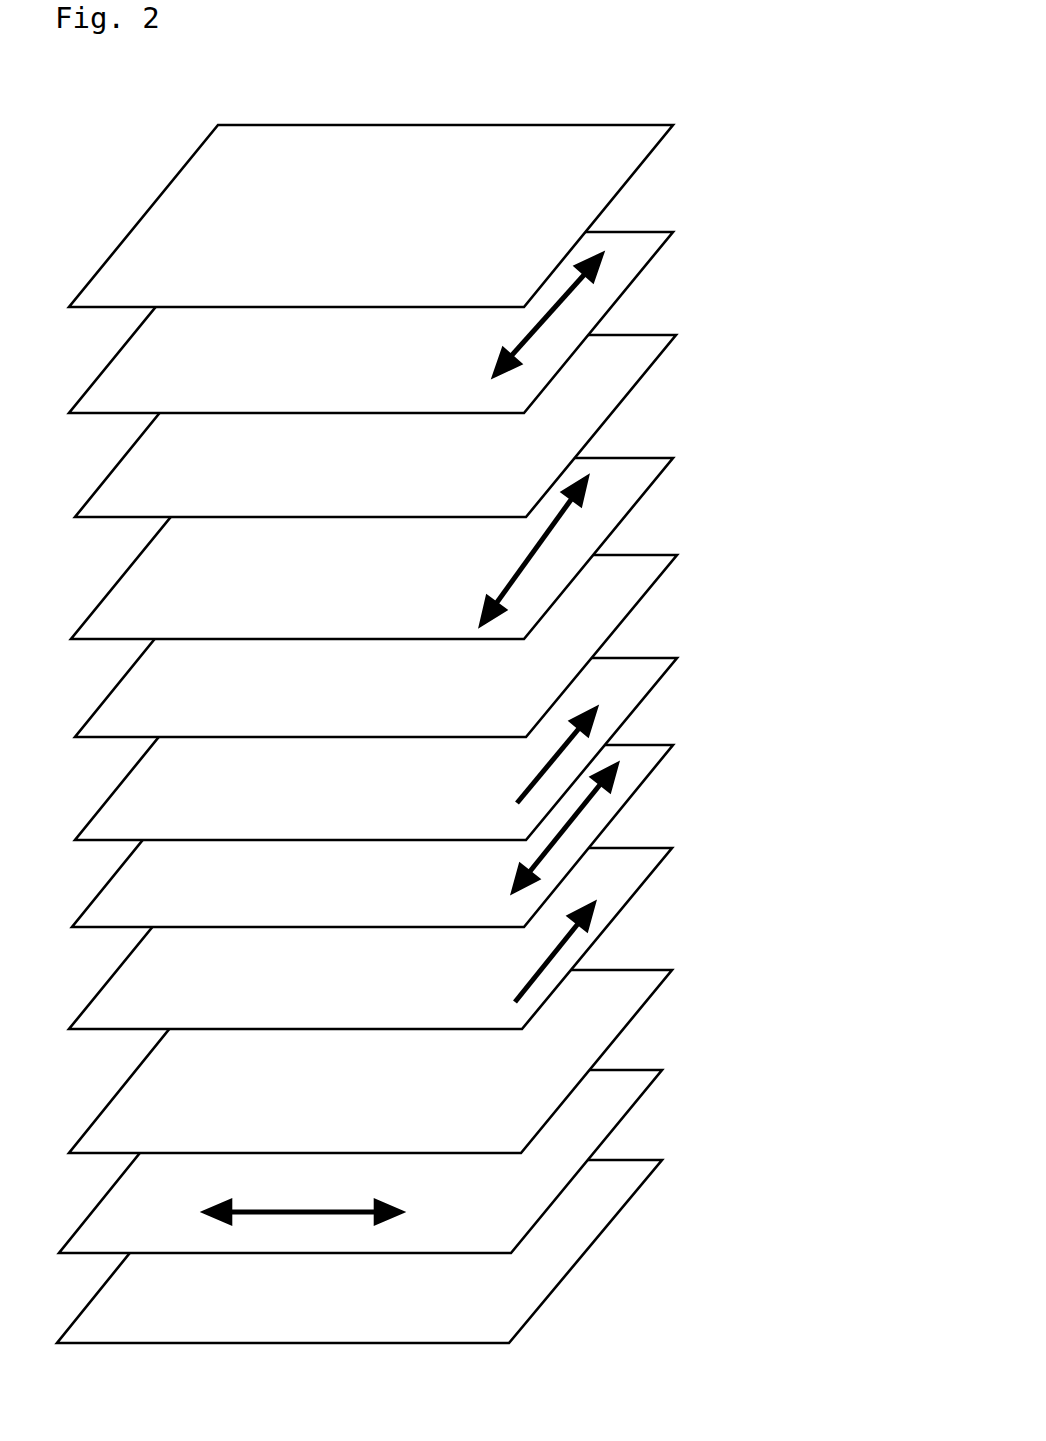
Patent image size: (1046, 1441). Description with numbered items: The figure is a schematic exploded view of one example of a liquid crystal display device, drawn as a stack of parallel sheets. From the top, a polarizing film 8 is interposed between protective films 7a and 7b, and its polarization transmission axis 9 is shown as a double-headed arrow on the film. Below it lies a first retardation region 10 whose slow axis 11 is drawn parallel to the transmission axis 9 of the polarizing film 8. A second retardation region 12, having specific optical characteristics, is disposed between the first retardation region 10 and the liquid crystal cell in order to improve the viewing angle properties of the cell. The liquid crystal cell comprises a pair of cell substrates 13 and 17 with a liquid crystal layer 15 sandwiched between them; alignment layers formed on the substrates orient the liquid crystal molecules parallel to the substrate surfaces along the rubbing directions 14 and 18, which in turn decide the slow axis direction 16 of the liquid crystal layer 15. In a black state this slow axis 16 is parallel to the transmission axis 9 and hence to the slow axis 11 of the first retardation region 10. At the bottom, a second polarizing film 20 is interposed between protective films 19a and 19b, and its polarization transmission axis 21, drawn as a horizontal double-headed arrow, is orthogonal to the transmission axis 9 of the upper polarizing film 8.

The protective film for polarizing film 7a is at (628, 178).
The polarizing film 8 is at (657, 257).
The polarization transmission axis of polarizing film 9 is at (555, 313).
The protective film for polarizing film 7b is at (637, 388).
The first retardation region 10 is at (627, 523).
The slow axis of first retardation region 11 is at (530, 572).
The second retardation region 12 is at (618, 637).
The cell substrate 13 is at (652, 687).
The rubbing direction of cell substrate 14 is at (607, 742).
The liquid crystal layer 15 is at (665, 763).
The slow axis direction of liquid crystal layer 16 is at (577, 815).
The cell substrate 17 is at (647, 885).
The rubbing direction of cell substrate 18 is at (567, 947).
The protective film for polarizing film 19a is at (627, 1023).
The polarizing film 20 is at (602, 1148).
The polarization transmission axis of polarizing film 21 is at (412, 1212).
The protective film for polarizing film 19b is at (568, 1272).